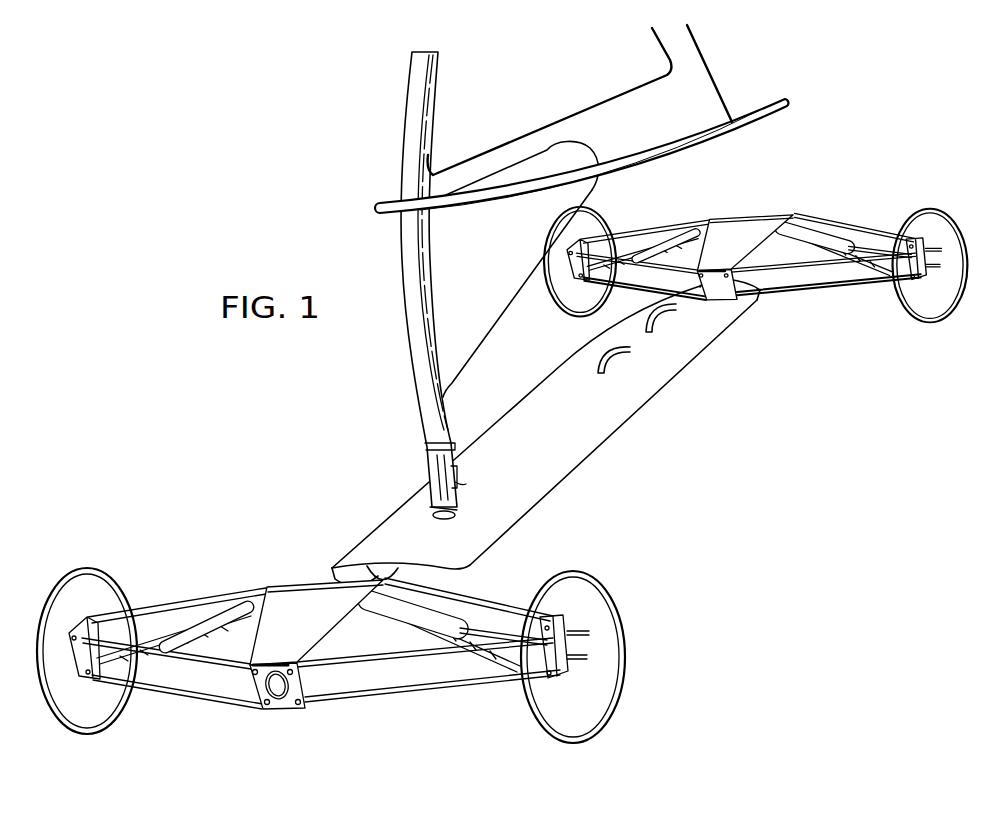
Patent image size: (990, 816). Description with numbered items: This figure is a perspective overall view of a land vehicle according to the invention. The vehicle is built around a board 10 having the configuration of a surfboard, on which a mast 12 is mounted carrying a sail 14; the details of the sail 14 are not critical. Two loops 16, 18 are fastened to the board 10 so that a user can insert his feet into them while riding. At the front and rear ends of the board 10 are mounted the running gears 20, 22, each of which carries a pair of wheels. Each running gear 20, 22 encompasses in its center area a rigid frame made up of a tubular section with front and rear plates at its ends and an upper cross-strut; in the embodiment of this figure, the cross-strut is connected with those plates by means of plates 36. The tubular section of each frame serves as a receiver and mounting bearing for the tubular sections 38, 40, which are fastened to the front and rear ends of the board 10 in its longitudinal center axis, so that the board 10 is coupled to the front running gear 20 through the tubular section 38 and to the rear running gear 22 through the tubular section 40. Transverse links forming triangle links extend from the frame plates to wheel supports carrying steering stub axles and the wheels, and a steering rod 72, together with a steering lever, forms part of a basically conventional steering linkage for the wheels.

The board 10 is at (593, 437).
The mast 12 is at (428, 463).
The sail 14 is at (710, 88).
The loop 16 is at (626, 352).
The loop 18 is at (670, 311).
The running gear 20 is at (500, 595).
The running gear 22 is at (847, 217).
The plate 36 is at (293, 613).
The tubular section 38 is at (372, 568).
The tubular section 40 is at (740, 312).
The steering rod 72 is at (837, 293).